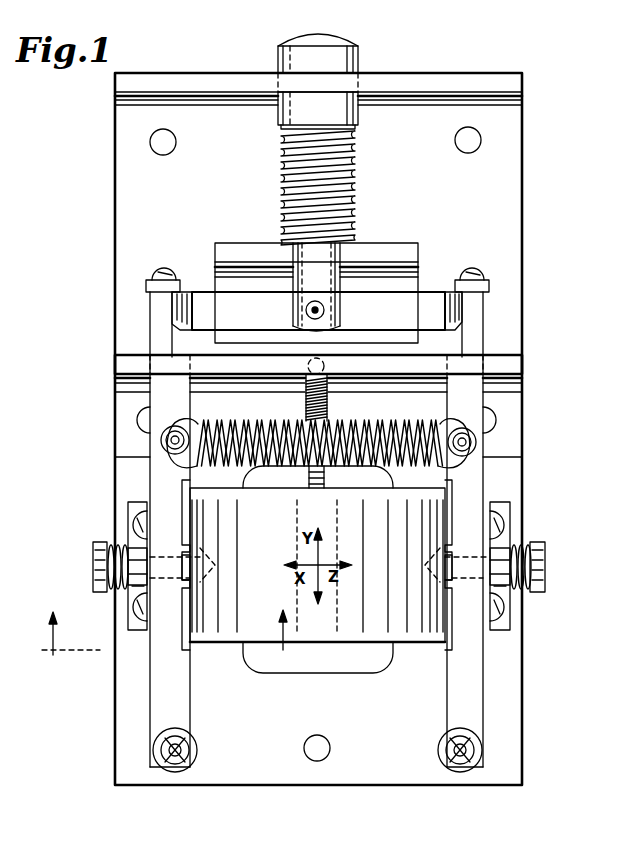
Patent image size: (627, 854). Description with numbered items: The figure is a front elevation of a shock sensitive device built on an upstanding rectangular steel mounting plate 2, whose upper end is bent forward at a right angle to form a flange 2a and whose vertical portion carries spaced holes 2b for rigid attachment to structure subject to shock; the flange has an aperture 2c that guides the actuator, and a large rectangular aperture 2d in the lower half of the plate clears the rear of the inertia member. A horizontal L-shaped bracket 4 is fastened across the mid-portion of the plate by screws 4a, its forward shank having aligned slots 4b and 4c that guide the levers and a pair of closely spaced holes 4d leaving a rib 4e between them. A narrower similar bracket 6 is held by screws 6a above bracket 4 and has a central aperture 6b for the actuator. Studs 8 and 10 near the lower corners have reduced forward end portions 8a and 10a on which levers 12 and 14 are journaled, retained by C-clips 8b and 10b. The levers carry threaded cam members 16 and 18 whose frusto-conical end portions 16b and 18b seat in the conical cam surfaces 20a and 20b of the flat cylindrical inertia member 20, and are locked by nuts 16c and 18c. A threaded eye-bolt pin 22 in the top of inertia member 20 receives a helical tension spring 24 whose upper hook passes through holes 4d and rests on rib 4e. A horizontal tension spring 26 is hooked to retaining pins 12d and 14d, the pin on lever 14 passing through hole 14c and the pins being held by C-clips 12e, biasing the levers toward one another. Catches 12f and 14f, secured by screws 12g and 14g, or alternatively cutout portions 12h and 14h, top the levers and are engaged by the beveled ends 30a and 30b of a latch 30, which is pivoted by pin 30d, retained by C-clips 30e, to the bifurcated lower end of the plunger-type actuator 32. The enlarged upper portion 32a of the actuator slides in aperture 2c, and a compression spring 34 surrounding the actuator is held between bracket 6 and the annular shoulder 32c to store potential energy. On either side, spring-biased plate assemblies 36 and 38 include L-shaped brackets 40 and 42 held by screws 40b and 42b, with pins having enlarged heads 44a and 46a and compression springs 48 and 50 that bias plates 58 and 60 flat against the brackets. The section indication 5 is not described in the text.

The mounting plate 2 is at (522, 185).
The forward extending flange 2a is at (490, 80).
The spaced holes 2b is at (170, 152).
The aperture 2c is at (276, 82).
The rectangular aperture 2d is at (335, 672).
The L-shaped bracket 4 is at (125, 362).
The screws 4a is at (145, 420).
The slot 4b is at (192, 366).
The slot 4c is at (444, 366).
The holes 4d is at (306, 364).
The rib 4e is at (309, 394).
The section line 5 is at (164, 648).
The bracket 6 is at (235, 243).
The screws 6a is at (232, 290).
The aperture 6b is at (348, 256).
The stud 8 is at (196, 740).
The reduced round forward end portion 8a is at (190, 760).
The resilient C-clip 8b is at (158, 756).
The stud 10 is at (440, 732).
The reduced round forward end portion 10a is at (480, 752).
The resilient C-clip 10b is at (440, 748).
The lever 12 is at (180, 692).
The retaining pin 12d is at (162, 442).
The C-clips 12e is at (172, 466).
The catch 12f is at (146, 284).
The screw 12g is at (166, 270).
The cutout portion 12h is at (172, 335).
The lever 14 is at (470, 676).
The hole 14c is at (476, 444).
The retaining pin 14d is at (468, 462).
The catch 14f is at (489, 284).
The screw 14g is at (472, 270).
The cutout portion 14h is at (462, 335).
The cam member 16 is at (168, 546).
The frusto-conical end portion 16b is at (208, 555).
The locking nut 16c is at (138, 590).
The cam member 18 is at (466, 546).
The frusto-conical end portion 18b is at (430, 556).
The locking nut 18c is at (502, 540).
The inertia member 20 is at (268, 602).
The cam surface 20a is at (208, 580).
The cam surface 20b is at (432, 582).
The spring-securing pin 22 is at (306, 480).
The helical tension spring 24 is at (328, 400).
The helical tension spring 26 is at (240, 414).
The latch 30 is at (382, 322).
The latch end 30a is at (186, 322).
The latch end 30b is at (446, 320).
The pin 30d is at (307, 316).
The C-clips 30e is at (306, 306).
The actuator 32 is at (352, 40).
The enlarged upper portion 32a is at (358, 110).
The annular shoulder 32c is at (356, 130).
The helical compression spring 34 is at (280, 186).
The spring-biased plate assembly 36 is at (88, 558).
The spring-biased plate assembly 38 is at (548, 552).
The L-shaped mounting bracket 40 is at (132, 508).
The screws 40b is at (138, 618).
The L-shaped mounting bracket 42 is at (504, 508).
The screws 42b is at (498, 616).
The enlarged head 44a is at (128, 586).
The enlarged head 46a is at (545, 578).
The helical compression spring 48 is at (110, 546).
The helical compression spring 50 is at (524, 590).
The plate 58 is at (192, 508).
The plate 60 is at (445, 492).